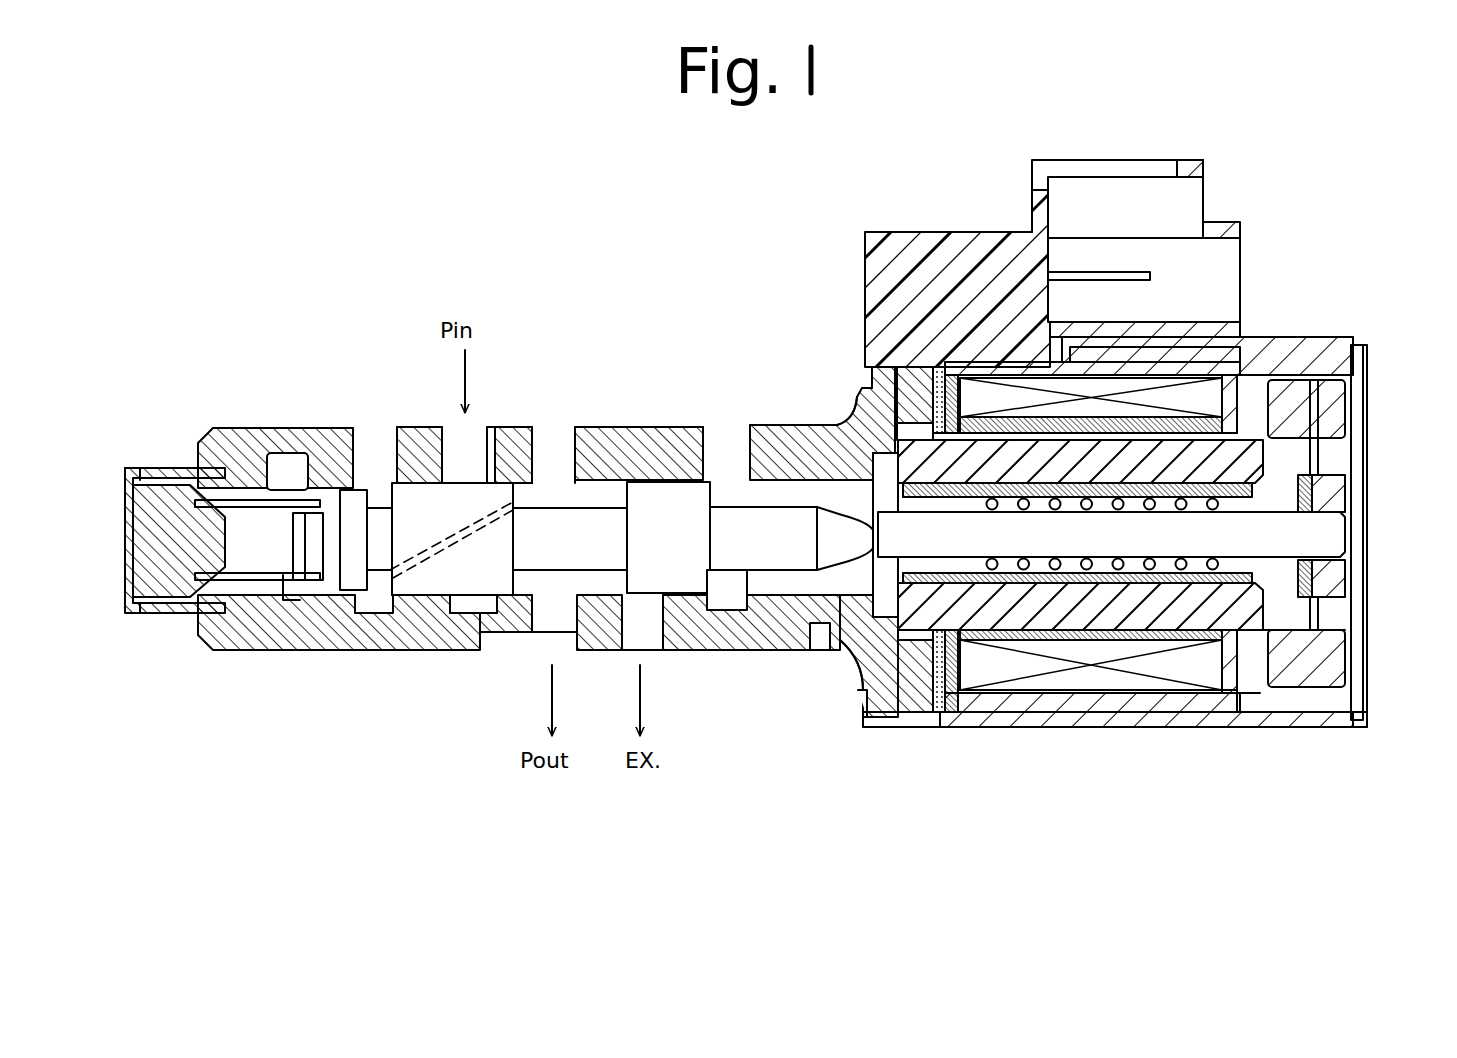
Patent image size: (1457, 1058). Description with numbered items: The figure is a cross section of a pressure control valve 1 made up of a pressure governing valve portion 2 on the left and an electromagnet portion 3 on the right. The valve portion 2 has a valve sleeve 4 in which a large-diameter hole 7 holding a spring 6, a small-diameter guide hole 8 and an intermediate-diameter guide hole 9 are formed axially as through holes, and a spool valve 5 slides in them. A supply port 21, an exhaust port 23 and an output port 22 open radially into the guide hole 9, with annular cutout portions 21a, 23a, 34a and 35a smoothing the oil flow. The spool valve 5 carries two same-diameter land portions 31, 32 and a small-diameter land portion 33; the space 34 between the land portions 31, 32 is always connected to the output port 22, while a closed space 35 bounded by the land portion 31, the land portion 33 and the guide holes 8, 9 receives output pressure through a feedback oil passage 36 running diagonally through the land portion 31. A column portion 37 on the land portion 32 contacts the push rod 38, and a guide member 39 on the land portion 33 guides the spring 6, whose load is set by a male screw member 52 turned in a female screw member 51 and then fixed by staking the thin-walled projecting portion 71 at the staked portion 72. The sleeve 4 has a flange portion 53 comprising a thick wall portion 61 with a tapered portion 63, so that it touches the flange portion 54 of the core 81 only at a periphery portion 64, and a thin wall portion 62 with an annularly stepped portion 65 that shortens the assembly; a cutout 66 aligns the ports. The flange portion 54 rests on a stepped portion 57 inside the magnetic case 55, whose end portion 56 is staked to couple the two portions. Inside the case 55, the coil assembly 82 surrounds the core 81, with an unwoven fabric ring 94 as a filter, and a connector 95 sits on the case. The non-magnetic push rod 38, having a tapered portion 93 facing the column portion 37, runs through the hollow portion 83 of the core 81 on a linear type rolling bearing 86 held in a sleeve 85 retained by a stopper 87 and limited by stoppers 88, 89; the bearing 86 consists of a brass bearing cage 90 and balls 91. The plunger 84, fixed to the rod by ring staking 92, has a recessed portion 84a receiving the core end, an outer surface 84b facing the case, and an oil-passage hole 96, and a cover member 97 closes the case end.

The pressure control valve 1 is at (713, 295).
The pressure governing valve portion 2 is at (630, 421).
The electromagnet portion 3 is at (1070, 740).
The valve sleeve 4 is at (322, 427).
The spool valve 5 is at (420, 493).
The spring 6 is at (230, 490).
The large-diameter hole 7 is at (208, 437).
The small-diameter guide hole 8 is at (300, 585).
The intermediate-diameter guide hole 9 is at (547, 460).
The supply port 21 is at (457, 443).
The annular cutout portion 21a is at (447, 650).
The output port 22 is at (560, 640).
The exhaust port 23 is at (643, 650).
The annular cutout portion 23a is at (643, 468).
The land portion 31 is at (417, 650).
The land portion 32 is at (685, 607).
The small-diameter land portion 33 is at (330, 650).
The space 34 is at (535, 440).
The annular cutout portion 34a is at (525, 600).
The closed space 35 is at (378, 455).
The annular cutout portion 35a is at (370, 650).
The feedback oil passage 36 is at (470, 600).
The column portion 37 is at (765, 520).
The push rod 38 is at (1247, 640).
The guide member 39 is at (283, 602).
The female screw member 51 is at (127, 620).
The male screw member 52 is at (145, 540).
The flange portion 53 is at (866, 386).
The flange portion 54 is at (917, 377).
The case 55 is at (1153, 717).
The end portion 56 is at (863, 719).
The stepped portion 57 is at (938, 717).
The thick wall portion 61 is at (843, 653).
The thin wall portion 62 is at (880, 700).
The tapered portion 63 is at (855, 418).
The periphery portion 64 is at (905, 440).
The annularly stepped portion 65 is at (855, 697).
The cutout 66 is at (818, 641).
The projecting portion 71 is at (128, 468).
The staked portion 72 is at (150, 614).
The core 81 is at (1200, 690).
The coil assembly 82 is at (1043, 690).
The hollow portion 83 is at (1103, 657).
The plunger 84 is at (1313, 680).
The recessed portion 84a is at (1278, 640).
The outer surface 84b is at (1232, 345).
The sleeve 85 is at (1218, 695).
The linear type rolling bearing 86 is at (1225, 365).
The stopper 87 is at (1310, 437).
The stopper 88 is at (830, 425).
The stopper 89 is at (1270, 490).
The bearing cage 90 is at (920, 640).
The balls 91 is at (990, 640).
The ring staking 92 is at (1347, 502).
The tapered portion 93 is at (837, 520).
The ring 94 is at (952, 360).
The connector 95 is at (1000, 257).
The oil-passage hole 96 is at (1335, 612).
The cover member 97 is at (1357, 663).